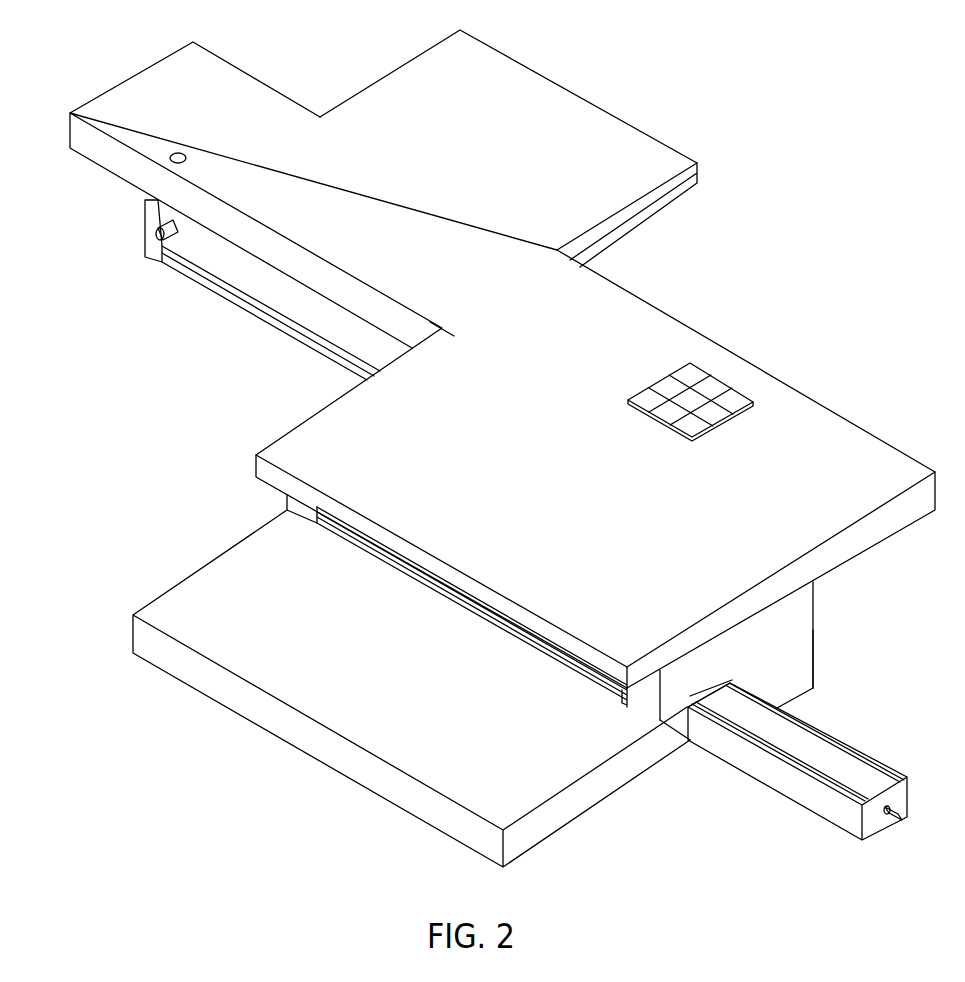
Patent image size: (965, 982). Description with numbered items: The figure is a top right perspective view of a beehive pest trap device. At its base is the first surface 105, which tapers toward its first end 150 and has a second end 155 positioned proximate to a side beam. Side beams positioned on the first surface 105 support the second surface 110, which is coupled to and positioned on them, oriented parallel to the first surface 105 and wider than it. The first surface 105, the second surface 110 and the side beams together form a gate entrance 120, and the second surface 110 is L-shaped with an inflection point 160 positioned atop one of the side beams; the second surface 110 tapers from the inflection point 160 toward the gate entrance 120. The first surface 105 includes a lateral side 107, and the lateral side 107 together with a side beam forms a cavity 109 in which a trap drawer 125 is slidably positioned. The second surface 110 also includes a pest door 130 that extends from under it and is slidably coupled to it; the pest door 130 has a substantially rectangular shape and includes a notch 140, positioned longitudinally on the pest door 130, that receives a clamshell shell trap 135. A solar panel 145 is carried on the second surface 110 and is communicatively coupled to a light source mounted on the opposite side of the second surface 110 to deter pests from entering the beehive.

The first surface 105 is at (425, 706).
The lateral side 107 is at (668, 739).
The cavity 109 is at (720, 687).
The second surface 110 is at (559, 483).
The gate entrance 120 is at (556, 648).
The trap drawer 125 is at (878, 757).
The pest door 130 is at (145, 236).
The clamshell shell trap 135 is at (500, 150).
The notch 140 is at (261, 301).
The solar panel 145 is at (733, 414).
The first end 150 is at (815, 612).
The second end 155 is at (814, 665).
The inflection point 160 is at (442, 330).